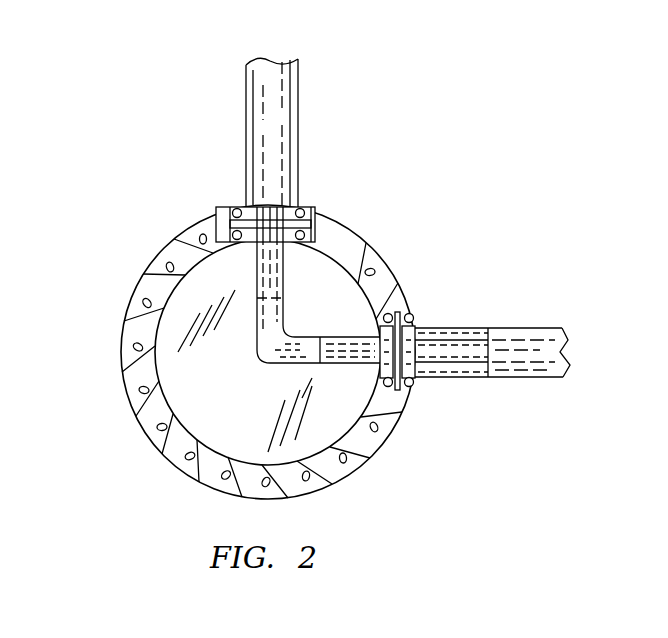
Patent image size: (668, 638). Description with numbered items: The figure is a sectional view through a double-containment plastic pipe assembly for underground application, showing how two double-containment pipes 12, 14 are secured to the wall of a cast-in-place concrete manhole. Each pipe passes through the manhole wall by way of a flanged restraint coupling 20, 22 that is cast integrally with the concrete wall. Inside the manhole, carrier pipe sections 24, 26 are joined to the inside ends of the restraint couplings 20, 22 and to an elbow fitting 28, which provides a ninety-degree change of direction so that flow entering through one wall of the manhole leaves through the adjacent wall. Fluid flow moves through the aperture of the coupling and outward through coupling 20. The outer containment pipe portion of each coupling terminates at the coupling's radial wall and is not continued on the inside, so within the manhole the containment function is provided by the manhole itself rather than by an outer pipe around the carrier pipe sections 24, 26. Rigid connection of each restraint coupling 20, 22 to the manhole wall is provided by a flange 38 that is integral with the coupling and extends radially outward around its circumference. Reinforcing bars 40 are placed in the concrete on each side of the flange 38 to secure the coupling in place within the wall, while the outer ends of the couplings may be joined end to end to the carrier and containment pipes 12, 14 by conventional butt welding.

The double-containment pipe 12 is at (275, 130).
The double-containment pipe 14 is at (520, 343).
The flanged restraint coupling 20 is at (425, 330).
The flanged restraint coupling 22 is at (270, 215).
The carrier pipe section 24 is at (347, 362).
The carrier pipe section 26 is at (258, 270).
The elbow fitting 28 is at (277, 343).
The flange 38 is at (393, 315).
The reinforcing bars 40 is at (300, 230).